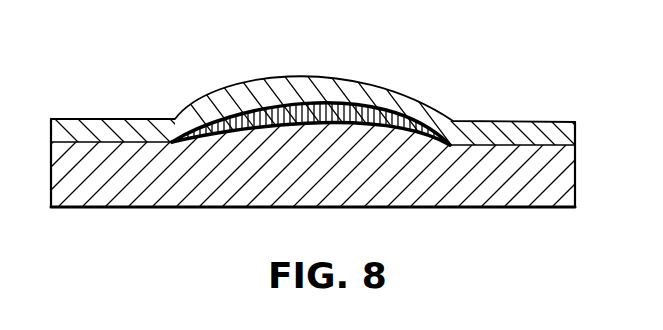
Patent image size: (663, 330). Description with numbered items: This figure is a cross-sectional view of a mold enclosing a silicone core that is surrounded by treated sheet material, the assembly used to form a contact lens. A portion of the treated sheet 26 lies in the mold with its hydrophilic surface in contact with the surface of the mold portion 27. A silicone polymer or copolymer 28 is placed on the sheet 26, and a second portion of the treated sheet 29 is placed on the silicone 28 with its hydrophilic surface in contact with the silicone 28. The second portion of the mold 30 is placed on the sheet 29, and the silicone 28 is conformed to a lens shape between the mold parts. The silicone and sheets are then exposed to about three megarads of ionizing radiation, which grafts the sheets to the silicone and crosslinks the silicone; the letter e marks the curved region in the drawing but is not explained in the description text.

The treated sheet 26 is at (363, 118).
The mold portion 27 is at (488, 187).
The silicone polymer or copolymer 28 is at (247, 120).
The second portion of the treated sheet 29 is at (358, 109).
The second portion of the mold 30 is at (425, 115).
The dome region indicator e is at (220, 92).